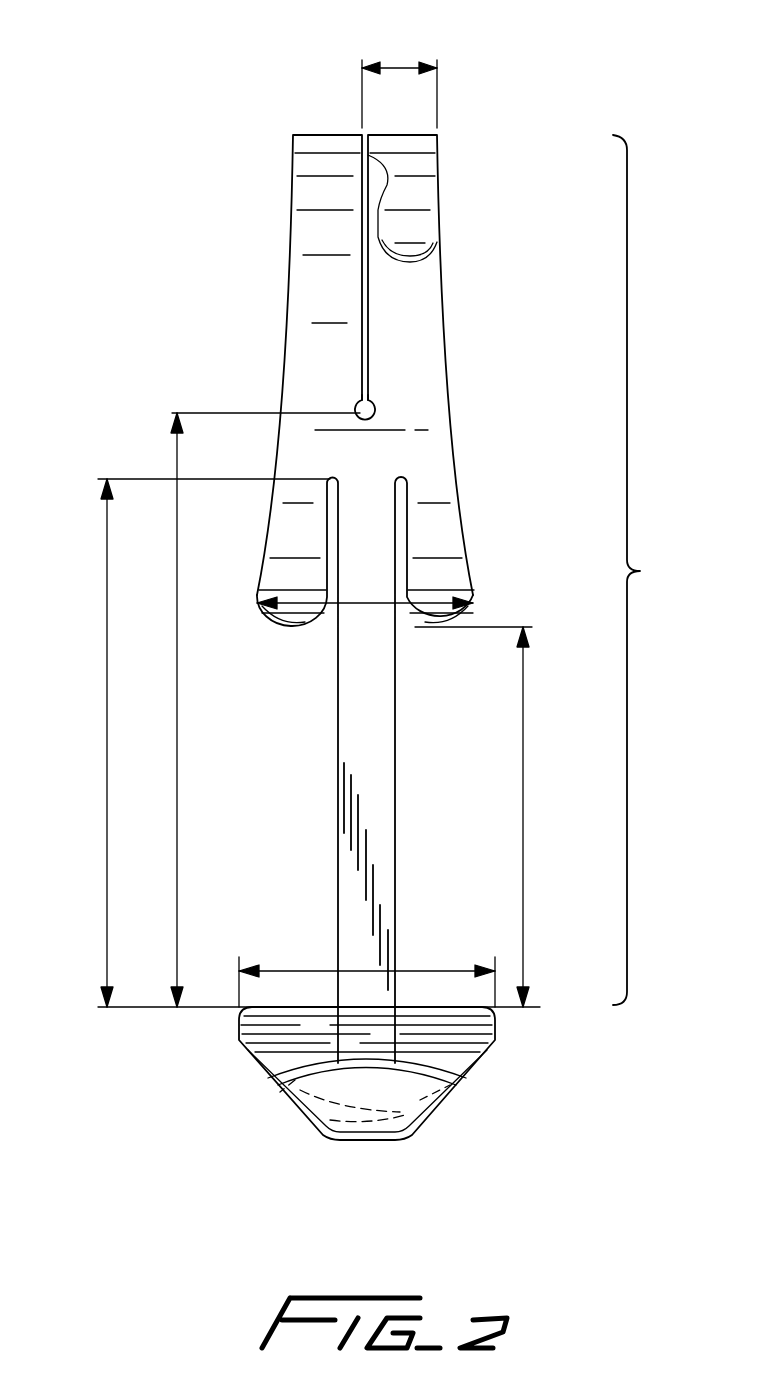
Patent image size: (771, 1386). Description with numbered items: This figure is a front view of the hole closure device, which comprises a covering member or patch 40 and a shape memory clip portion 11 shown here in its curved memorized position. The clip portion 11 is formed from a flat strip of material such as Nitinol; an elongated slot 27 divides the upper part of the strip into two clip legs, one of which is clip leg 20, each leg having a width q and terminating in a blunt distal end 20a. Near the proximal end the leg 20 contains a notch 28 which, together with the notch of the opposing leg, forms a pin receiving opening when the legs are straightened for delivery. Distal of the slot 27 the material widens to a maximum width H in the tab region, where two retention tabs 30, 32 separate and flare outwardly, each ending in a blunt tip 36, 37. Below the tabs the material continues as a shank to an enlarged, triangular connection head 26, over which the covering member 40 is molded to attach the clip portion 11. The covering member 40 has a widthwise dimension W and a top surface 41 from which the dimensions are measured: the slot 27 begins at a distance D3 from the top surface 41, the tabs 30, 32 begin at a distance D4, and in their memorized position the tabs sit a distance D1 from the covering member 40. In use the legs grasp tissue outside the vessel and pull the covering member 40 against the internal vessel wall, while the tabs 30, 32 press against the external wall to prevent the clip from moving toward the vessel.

The clip portion 11 is at (640, 571).
The clip leg 20 is at (415, 170).
The blunt distal end 20a is at (403, 260).
The enlarged head or connection tab 26 is at (387, 1097).
The elongated slot 27 is at (367, 355).
The notch 28 is at (388, 180).
The retention tab 30 is at (300, 548).
The retention tab 32 is at (442, 543).
The blunt tip 36 is at (298, 620).
The blunt tip 37 is at (430, 620).
The covering member or patch 40 is at (453, 1025).
The top surface 41 is at (305, 1009).
The maximum width H is at (363, 605).
The widthwise dimension W is at (312, 971).
The width of leg q is at (400, 68).
The distance D1 is at (523, 790).
The distance D3 is at (177, 782).
The distance D4 is at (107, 745).